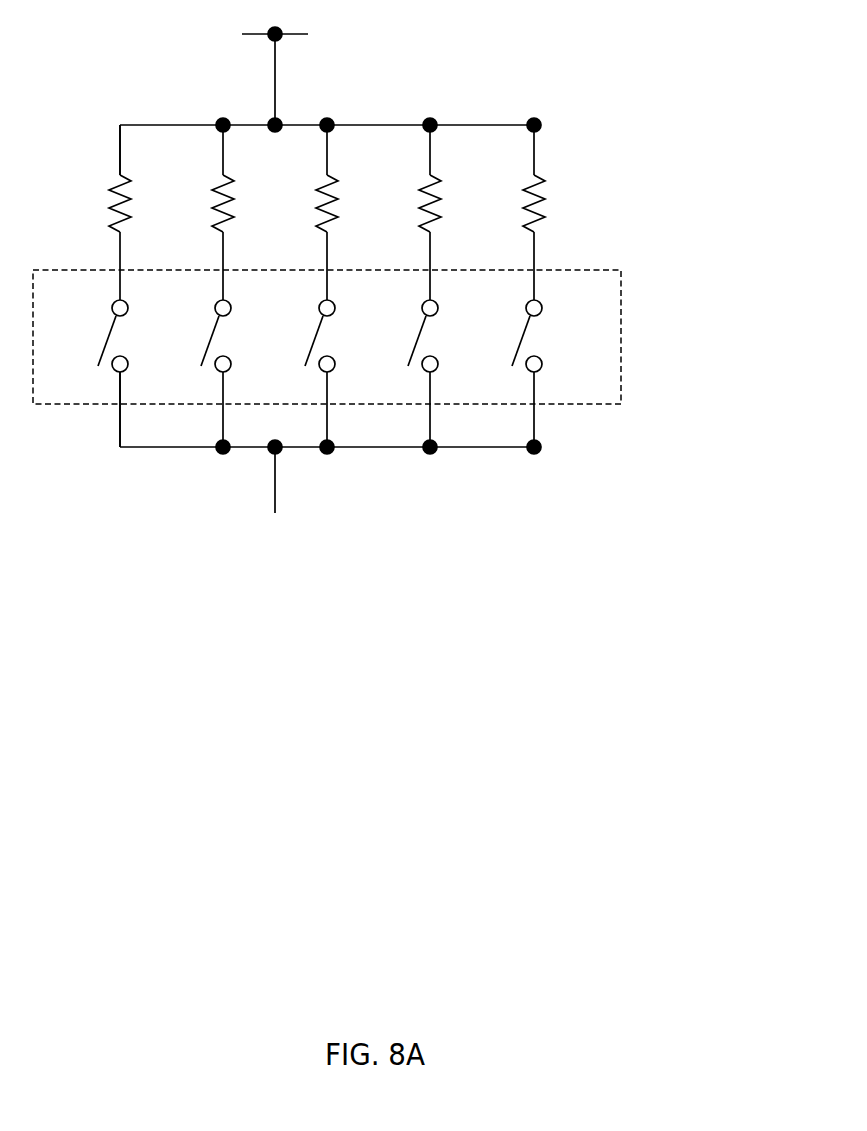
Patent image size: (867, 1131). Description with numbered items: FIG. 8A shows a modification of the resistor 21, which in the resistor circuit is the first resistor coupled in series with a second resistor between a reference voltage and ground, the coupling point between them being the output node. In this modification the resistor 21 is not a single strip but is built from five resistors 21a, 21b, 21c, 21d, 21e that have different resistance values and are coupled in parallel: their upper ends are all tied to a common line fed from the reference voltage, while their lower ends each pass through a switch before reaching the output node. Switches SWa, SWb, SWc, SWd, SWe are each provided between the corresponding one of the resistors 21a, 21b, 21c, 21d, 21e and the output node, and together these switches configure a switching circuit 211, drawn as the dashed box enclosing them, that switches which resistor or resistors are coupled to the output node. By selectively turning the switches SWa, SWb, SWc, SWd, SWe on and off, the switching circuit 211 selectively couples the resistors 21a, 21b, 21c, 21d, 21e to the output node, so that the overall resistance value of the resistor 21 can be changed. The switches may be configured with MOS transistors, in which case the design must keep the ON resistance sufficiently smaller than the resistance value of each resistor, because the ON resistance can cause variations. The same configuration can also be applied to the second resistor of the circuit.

The resistor 21 is at (373, 281).
The switching circuit 211 is at (373, 358).
The resistor 21a is at (95, 212).
The resistor 21b is at (198, 212).
The resistor 21c is at (302, 212).
The resistor 21d is at (405, 212).
The resistor 21e is at (509, 212).
The switch SWa is at (105, 342).
The switch SWb is at (208, 342).
The switch SWc is at (312, 342).
The switch SWd is at (417, 342).
The switch SWe is at (520, 342).